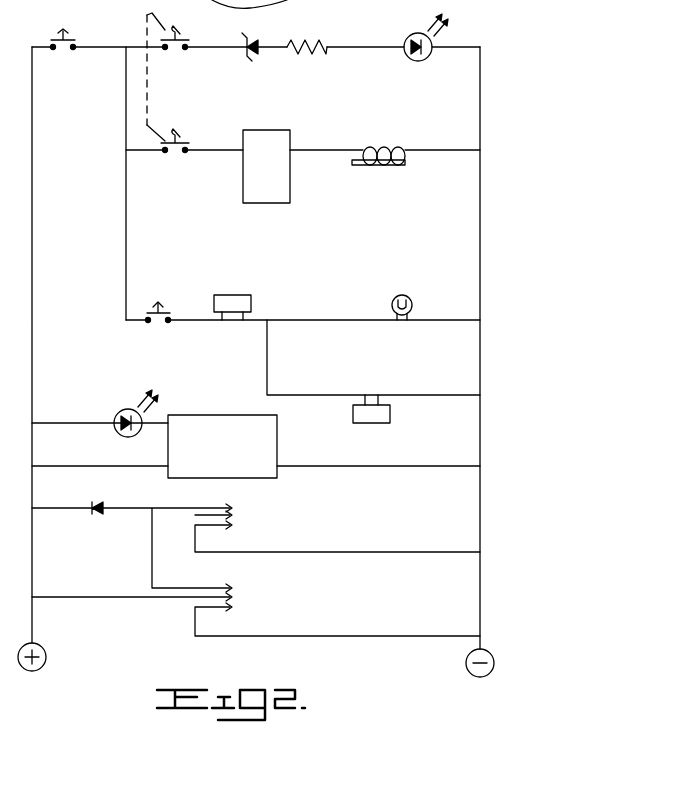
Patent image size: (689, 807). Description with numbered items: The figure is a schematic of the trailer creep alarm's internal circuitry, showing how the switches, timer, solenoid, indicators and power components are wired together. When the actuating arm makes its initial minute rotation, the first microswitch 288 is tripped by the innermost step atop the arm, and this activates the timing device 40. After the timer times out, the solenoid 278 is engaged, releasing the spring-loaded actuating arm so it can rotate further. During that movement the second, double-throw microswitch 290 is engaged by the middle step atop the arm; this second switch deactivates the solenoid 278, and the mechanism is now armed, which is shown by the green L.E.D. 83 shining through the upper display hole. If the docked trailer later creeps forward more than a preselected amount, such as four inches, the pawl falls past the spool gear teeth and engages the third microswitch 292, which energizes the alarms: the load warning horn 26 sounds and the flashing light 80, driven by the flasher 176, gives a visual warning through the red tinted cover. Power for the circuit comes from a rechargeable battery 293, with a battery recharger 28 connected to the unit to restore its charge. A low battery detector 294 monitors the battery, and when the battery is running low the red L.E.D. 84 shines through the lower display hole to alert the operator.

The first microswitch 288 is at (88, 8).
The second double-throw microswitch 290 is at (160, 74).
The green L.E.D. 83 is at (408, 61).
The solenoid 278 is at (360, 166).
The timing device 40 is at (278, 205).
The third microswitch 292 is at (160, 294).
The flasher 176 is at (234, 294).
The flashing light 80 is at (404, 295).
The load warning horn 26 is at (395, 424).
The red L.E.D. 84 is at (116, 418).
The low battery detector 294 is at (218, 424).
The rechargeable battery 293 is at (245, 510).
The battery recharger 28 is at (250, 596).